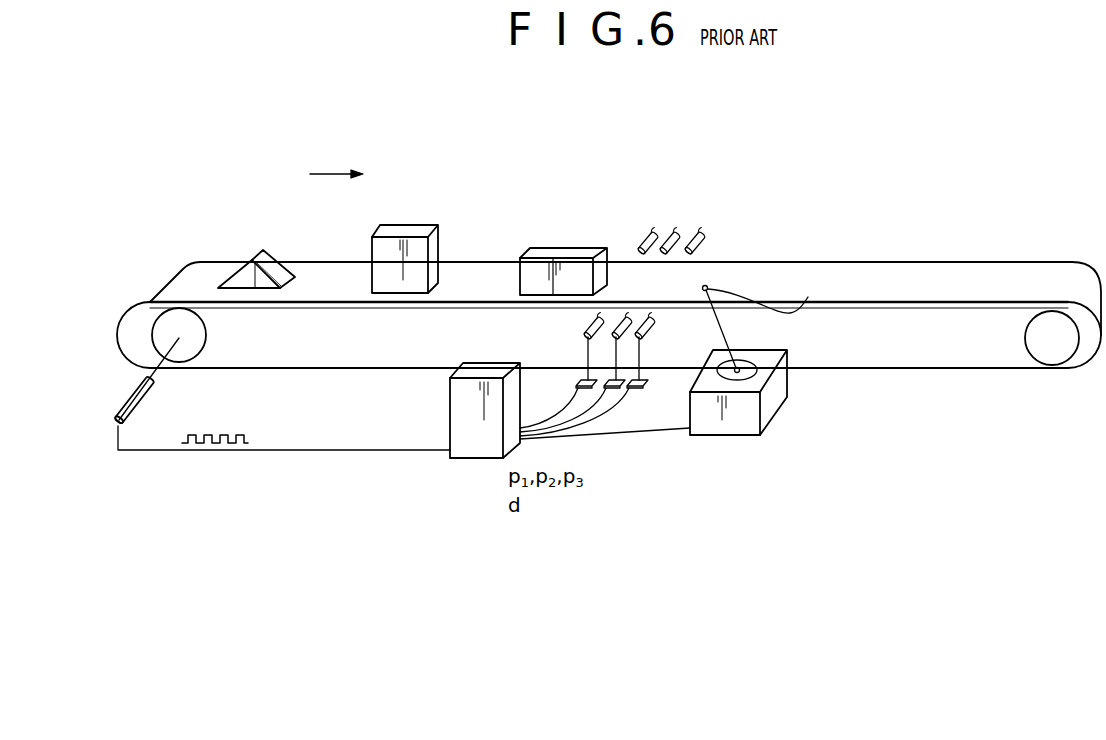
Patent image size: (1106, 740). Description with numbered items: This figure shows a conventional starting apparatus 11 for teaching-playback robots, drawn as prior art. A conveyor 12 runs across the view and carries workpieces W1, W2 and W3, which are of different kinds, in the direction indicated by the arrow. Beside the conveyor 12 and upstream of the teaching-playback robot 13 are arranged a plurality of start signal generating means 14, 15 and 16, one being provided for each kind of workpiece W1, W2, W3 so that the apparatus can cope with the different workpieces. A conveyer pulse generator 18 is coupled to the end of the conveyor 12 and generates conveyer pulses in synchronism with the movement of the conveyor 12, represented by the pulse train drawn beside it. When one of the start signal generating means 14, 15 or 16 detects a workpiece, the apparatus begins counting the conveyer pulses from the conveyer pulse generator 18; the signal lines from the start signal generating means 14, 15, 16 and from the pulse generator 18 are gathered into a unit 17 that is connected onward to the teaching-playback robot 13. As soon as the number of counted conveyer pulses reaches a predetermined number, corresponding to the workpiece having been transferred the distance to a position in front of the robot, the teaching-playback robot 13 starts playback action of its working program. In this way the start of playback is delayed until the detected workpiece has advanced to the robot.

The conventional starting apparatus 11 is at (613, 448).
The conveyor 12 is at (177, 285).
The teaching-playback robot 13 is at (777, 403).
The start signal generating means 14 is at (587, 323).
The start signal generating means 15 is at (623, 317).
The start signal generating means 16 is at (650, 328).
The controller 17 is at (467, 447).
The conveyer pulse generator 18 is at (143, 404).
The workpiece W1 is at (545, 253).
The workpiece W2 is at (408, 228).
The workpiece W3 is at (273, 250).